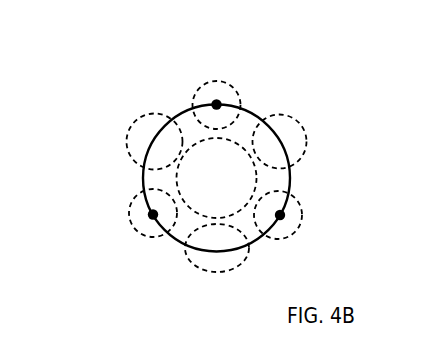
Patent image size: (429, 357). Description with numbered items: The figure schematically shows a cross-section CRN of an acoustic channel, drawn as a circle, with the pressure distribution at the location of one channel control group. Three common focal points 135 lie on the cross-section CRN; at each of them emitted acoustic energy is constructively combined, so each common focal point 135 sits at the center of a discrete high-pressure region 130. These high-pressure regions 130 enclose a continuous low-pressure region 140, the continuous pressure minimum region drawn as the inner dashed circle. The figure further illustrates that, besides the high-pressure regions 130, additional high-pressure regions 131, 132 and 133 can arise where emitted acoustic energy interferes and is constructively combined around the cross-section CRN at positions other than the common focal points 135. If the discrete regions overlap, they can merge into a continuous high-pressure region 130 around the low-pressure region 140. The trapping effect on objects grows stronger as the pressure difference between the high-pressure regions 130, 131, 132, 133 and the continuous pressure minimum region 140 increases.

The high-pressure region 130 is at (219, 88).
The common focal point 135 is at (220, 101).
The additional high-pressure region 131 is at (137, 132).
The additional high-pressure region 132 is at (298, 128).
The additional high-pressure region 133 is at (218, 271).
The continuous low-pressure region 140 is at (178, 182).
The cross-section of the acoustic channel CRN is at (290, 178).